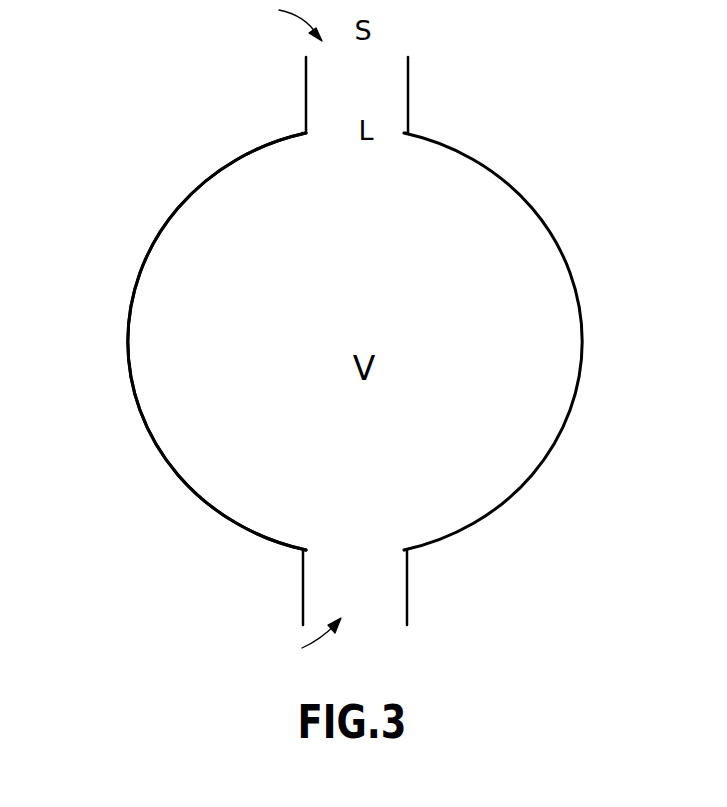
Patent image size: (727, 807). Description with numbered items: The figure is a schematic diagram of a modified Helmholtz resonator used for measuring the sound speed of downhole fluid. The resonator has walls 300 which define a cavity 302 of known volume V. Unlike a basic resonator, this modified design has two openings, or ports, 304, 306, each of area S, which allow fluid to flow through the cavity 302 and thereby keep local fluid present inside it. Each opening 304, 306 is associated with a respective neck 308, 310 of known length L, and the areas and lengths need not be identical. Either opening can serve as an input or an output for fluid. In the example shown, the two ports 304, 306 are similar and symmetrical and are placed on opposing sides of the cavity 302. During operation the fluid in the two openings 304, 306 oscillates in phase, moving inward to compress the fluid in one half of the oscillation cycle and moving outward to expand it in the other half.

The walls 300 is at (148, 247).
The cavity 302 is at (185, 373).
The opening 304 is at (275, 20).
The opening 306 is at (294, 642).
The neck 308 is at (305, 98).
The neck 310 is at (302, 580).